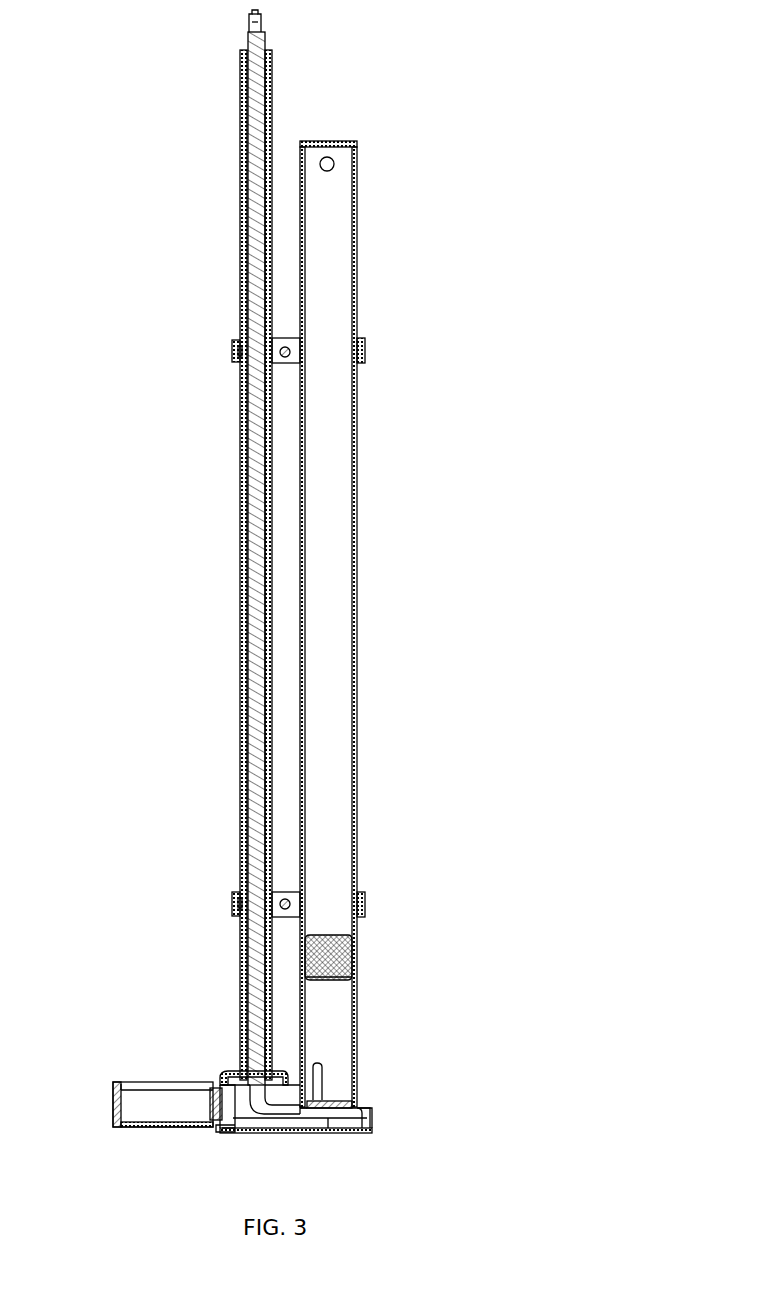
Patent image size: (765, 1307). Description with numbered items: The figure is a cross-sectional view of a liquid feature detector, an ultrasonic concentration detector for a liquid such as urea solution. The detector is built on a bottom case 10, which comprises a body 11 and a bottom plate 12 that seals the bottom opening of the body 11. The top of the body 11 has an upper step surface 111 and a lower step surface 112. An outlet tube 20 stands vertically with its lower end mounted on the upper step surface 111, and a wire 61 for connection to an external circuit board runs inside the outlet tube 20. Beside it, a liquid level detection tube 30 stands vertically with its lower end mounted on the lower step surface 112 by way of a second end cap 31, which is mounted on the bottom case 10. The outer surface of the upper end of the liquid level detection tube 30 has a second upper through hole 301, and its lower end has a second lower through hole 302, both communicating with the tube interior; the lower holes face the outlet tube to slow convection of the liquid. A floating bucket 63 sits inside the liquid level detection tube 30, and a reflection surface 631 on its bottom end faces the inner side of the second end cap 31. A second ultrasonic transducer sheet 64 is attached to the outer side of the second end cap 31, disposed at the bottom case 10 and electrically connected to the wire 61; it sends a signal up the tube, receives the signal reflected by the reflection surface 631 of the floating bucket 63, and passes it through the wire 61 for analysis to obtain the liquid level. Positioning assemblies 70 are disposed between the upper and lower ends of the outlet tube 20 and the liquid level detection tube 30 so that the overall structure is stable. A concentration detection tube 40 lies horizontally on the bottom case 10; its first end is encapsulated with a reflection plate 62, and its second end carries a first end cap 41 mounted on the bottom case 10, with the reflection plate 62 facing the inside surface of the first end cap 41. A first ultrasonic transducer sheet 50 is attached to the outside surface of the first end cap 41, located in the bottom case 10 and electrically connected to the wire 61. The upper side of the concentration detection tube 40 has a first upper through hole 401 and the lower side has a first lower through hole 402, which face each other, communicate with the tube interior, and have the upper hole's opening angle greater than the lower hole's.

The outlet tube 20 is at (240, 472).
The wire 61 is at (253, 537).
The liquid level detection tube 30 is at (357, 483).
The second upper through hole 301 is at (333, 167).
The positioning assemblies 70 is at (232, 355).
The floating bucket 63 is at (352, 953).
The reflection surface 631 is at (352, 982).
The bottom case 10 is at (372, 1131).
The bottom plate 12 is at (265, 1133).
The body 11 is at (290, 1116).
The lower step surface 112 is at (306, 1112).
The upper step surface 111 is at (232, 1072).
The second lower through hole 302 is at (318, 1080).
The second end cap 31 is at (345, 1105).
The second ultrasonic transducer sheet 64 is at (367, 1114).
The concentration detection tube 40 is at (129, 1102).
The reflection plate 62 is at (117, 1105).
The first upper through hole 401 is at (160, 1090).
The first lower through hole 402 is at (165, 1125).
The first ultrasonic transducer sheet 50 is at (212, 1090).
The first end cap 41 is at (214, 1122).